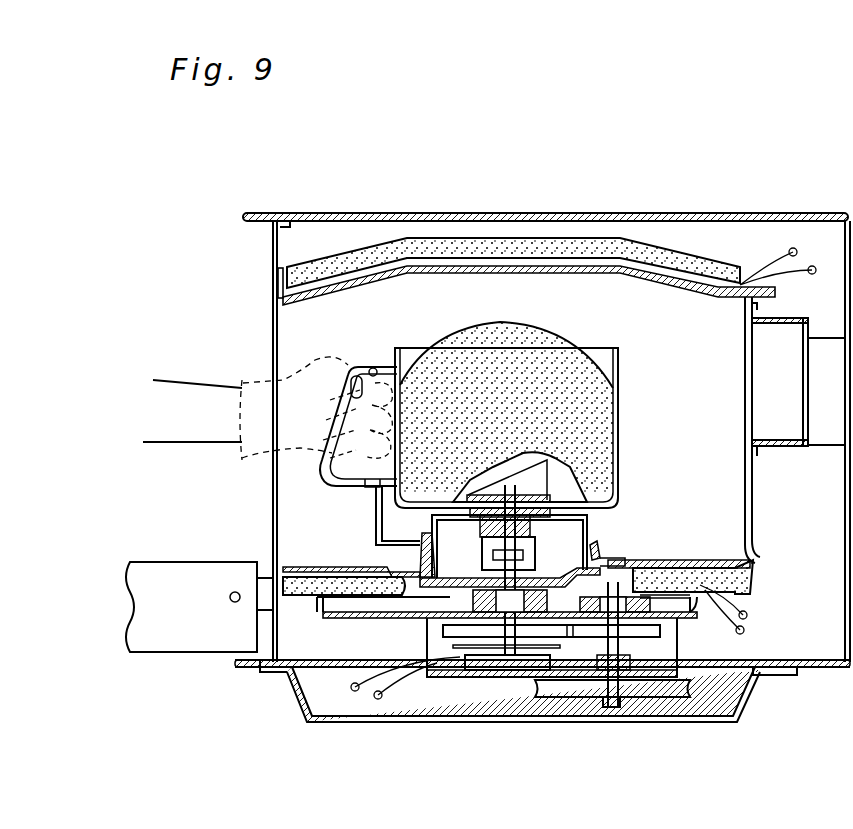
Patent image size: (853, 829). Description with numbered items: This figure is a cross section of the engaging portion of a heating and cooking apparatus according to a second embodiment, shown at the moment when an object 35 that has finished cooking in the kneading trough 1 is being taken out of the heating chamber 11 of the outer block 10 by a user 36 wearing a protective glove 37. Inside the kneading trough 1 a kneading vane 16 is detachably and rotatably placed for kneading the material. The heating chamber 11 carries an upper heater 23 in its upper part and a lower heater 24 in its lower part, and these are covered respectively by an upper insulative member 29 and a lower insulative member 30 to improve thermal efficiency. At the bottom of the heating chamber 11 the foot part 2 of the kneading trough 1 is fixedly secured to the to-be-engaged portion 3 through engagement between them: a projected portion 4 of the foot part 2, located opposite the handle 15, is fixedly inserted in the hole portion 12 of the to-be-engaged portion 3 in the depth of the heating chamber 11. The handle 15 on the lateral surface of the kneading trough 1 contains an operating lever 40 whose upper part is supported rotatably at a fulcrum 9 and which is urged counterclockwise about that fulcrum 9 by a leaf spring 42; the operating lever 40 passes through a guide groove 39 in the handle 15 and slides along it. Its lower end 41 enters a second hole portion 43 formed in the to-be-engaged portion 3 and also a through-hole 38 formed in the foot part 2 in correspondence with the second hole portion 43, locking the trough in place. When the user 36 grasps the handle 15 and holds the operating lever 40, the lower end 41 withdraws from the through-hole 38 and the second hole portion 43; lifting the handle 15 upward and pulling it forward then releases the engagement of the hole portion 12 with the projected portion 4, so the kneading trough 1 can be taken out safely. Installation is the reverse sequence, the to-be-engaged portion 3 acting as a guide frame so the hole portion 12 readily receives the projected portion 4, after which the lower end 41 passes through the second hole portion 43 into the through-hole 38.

The kneading trough 1 is at (620, 363).
The foot part 2 is at (588, 520).
The to-be-engaged portion 3 is at (598, 545).
The projected portion 4 is at (607, 557).
The fulcrum 9 is at (372, 368).
The outer block 10 is at (622, 214).
The heating chamber 11 is at (473, 300).
The hole portion 12 is at (595, 562).
The handle 15 is at (395, 350).
The kneading vane 16 is at (533, 476).
The upper heater 23 is at (672, 284).
The lower heater 24 is at (692, 567).
The upper insulative member 29 is at (725, 297).
The lower insulative member 30 is at (705, 565).
The object 35 is at (515, 335).
The user 36 is at (182, 408).
The protective glove 37 is at (277, 387).
The through-hole 38 is at (509, 543).
The guide groove 39 is at (357, 487).
The operating lever 40 is at (332, 483).
The lower end 41 is at (430, 576).
The leaf spring 42 is at (353, 366).
The second hole portion 43 is at (420, 548).